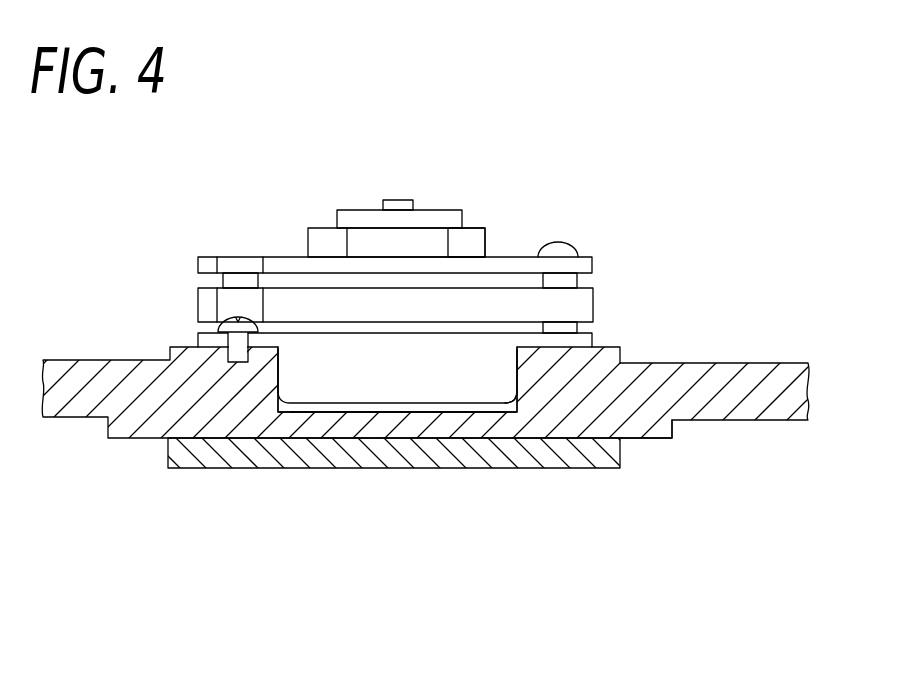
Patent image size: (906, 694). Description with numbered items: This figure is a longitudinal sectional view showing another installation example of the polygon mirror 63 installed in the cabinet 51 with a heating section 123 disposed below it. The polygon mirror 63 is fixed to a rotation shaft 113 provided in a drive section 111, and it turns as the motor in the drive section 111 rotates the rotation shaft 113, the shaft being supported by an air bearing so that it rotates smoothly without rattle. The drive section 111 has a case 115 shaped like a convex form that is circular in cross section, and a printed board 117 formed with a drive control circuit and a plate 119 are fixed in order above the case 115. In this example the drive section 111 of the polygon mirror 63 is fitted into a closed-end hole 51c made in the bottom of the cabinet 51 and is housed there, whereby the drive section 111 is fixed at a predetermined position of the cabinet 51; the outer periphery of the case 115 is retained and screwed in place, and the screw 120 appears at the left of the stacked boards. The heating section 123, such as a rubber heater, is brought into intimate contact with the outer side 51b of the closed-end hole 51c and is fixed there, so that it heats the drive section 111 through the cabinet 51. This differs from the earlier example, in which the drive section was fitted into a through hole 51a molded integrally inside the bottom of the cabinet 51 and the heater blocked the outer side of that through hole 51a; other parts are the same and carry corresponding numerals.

The cabinet 51 is at (738, 432).
The through hole 51a is at (278, 377).
The outer side 51b is at (650, 440).
The closed-end hole 51c is at (355, 403).
The polygon mirror 63 is at (485, 242).
The drive section 111 is at (524, 413).
The rotation shaft 113 is at (385, 206).
The case 115 is at (420, 412).
The printed board 117 is at (593, 305).
The plate 119 is at (592, 268).
The screw 120 is at (222, 320).
The heating section 123 is at (587, 468).